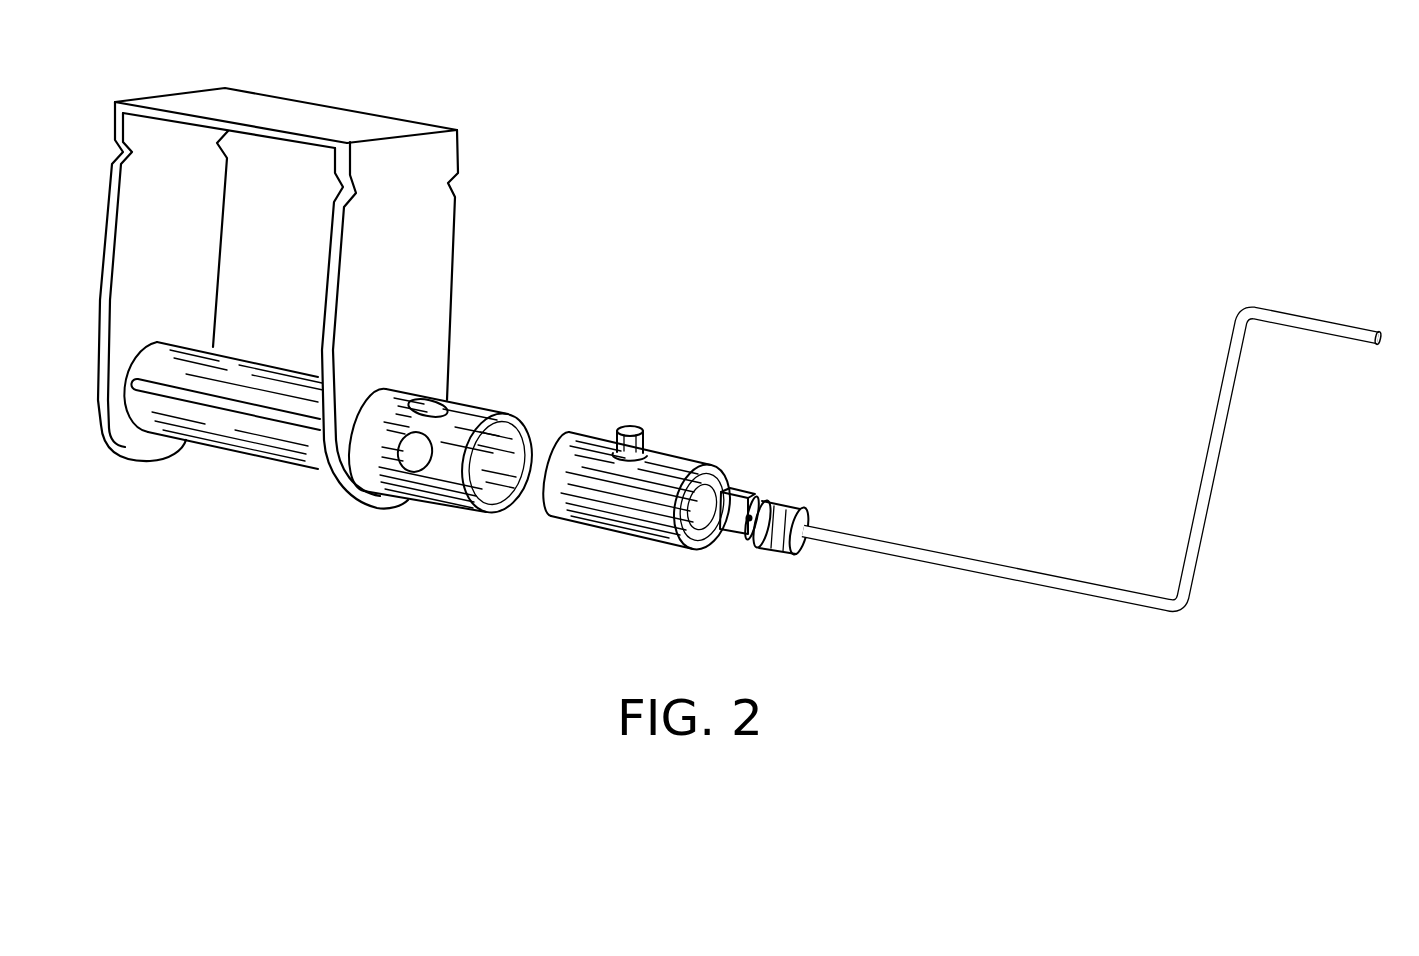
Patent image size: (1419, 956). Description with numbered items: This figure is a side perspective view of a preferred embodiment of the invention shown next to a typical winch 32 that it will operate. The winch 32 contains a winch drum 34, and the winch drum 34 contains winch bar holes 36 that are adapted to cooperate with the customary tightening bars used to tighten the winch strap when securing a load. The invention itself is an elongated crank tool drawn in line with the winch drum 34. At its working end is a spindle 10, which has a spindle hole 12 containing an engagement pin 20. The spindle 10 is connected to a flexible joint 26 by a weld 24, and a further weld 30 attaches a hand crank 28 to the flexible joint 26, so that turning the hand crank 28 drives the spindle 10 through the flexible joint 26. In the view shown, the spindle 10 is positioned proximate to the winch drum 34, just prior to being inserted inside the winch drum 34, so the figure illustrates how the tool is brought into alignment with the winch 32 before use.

The spindle 10 is at (640, 451).
The spindle hole 12 is at (648, 445).
The engagement pin 20 is at (618, 448).
The weld 24 is at (722, 492).
The flexible joint 26 is at (797, 467).
The hand crank 28 is at (1202, 455).
The weld 30 is at (810, 522).
The winch 32 is at (425, 290).
The winch drum 34 is at (232, 452).
The winch bar holes 36 is at (440, 398).